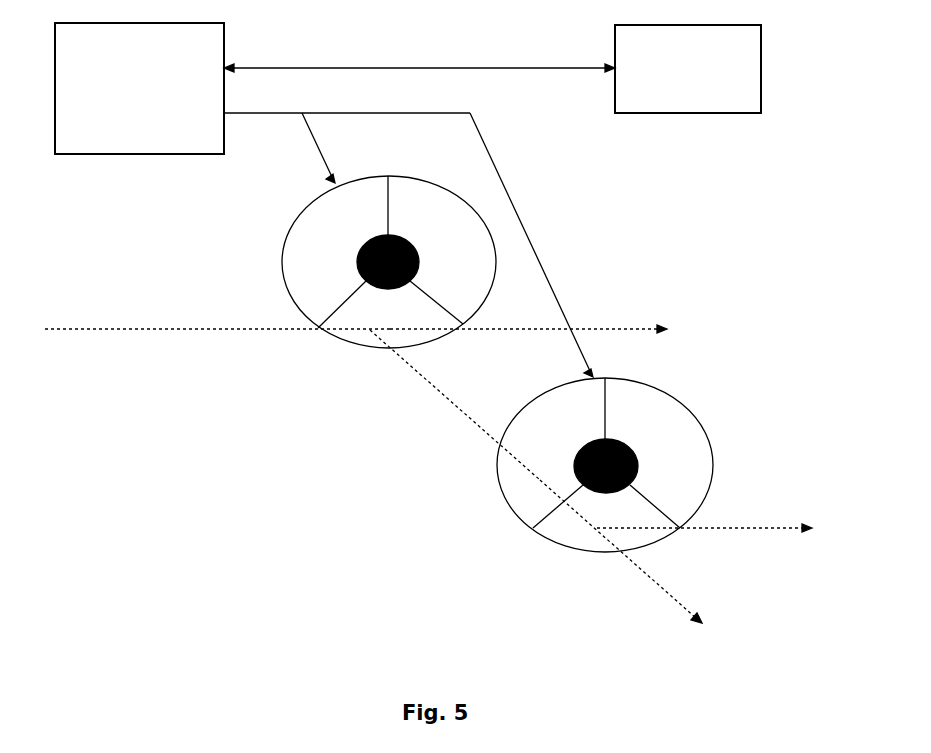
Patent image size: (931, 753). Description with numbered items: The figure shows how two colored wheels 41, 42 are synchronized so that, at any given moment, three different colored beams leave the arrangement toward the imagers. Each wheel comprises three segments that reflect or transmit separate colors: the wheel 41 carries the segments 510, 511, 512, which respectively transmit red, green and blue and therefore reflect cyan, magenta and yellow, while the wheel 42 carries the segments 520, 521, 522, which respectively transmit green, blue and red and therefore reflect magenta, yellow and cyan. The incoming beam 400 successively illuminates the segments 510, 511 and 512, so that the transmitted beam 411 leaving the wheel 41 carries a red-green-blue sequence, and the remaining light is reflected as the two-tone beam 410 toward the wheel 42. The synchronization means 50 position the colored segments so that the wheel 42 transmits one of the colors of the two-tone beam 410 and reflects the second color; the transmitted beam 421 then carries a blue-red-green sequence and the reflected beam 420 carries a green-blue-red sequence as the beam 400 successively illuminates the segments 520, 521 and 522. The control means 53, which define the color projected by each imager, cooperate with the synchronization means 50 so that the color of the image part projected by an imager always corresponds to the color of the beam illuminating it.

The synchronization means 50 is at (90, 155).
The control means 53 is at (672, 113).
The colored wheel 41 is at (305, 277).
The colored wheel 42 is at (567, 480).
The segment 510 is at (283, 287).
The segment 511 is at (345, 340).
The segment 512 is at (401, 200).
The segment 520 is at (535, 420).
The segment 521 is at (557, 545).
The segment 522 is at (660, 420).
The beam 400 is at (175, 332).
The two-tone beam 410 is at (415, 365).
The transmitted beam 411 is at (595, 328).
The reflected beam 420 is at (640, 570).
The transmitted beam 421 is at (750, 528).